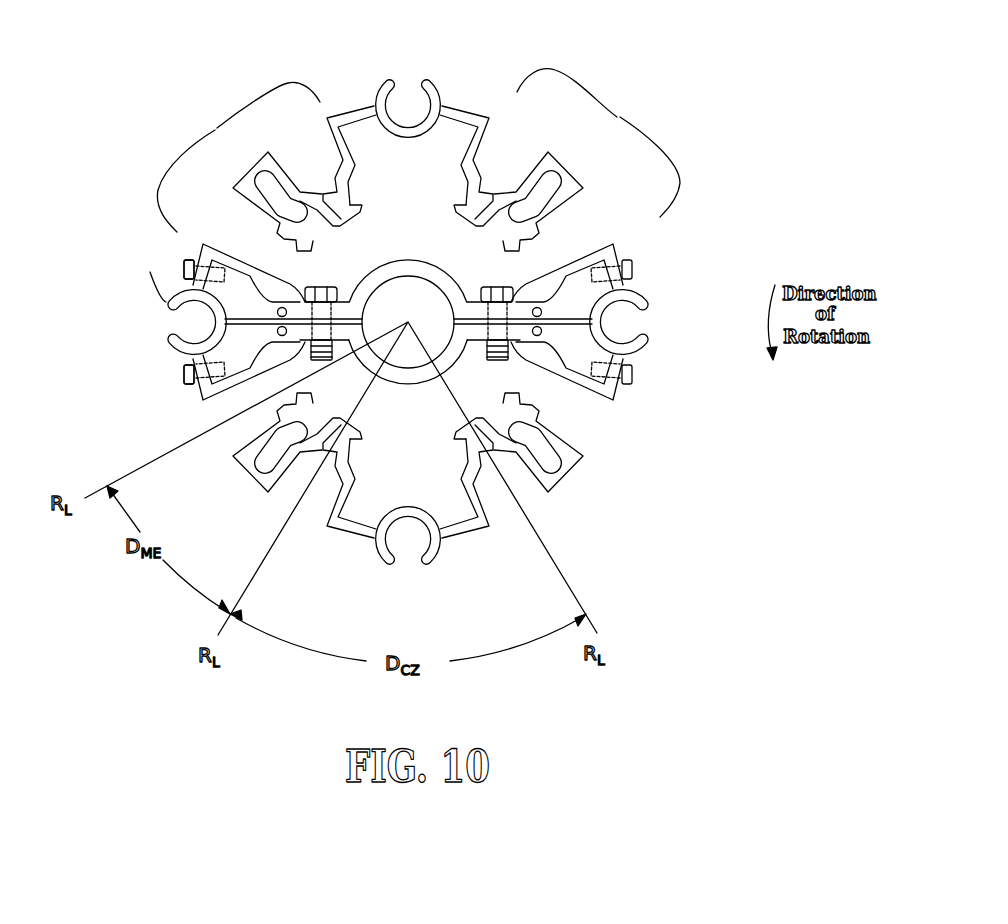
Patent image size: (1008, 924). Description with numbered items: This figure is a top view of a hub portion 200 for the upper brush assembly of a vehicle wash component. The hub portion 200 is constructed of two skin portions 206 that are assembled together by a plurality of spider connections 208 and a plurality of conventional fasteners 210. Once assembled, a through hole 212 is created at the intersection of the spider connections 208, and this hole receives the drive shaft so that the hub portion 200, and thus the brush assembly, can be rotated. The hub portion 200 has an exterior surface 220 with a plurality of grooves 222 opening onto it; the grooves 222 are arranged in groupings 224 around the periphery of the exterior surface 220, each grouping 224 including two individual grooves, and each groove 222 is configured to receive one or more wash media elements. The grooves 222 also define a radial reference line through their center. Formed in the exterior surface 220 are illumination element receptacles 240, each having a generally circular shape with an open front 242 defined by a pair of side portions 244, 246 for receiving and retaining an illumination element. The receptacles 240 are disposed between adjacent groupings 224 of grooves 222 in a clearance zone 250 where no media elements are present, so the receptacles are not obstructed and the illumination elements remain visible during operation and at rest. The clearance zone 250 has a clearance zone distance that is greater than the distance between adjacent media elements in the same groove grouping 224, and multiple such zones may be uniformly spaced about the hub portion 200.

The hub portion 200 is at (596, 80).
The skin portions 206 is at (613, 248).
The spider connections 208 is at (397, 270).
The fasteners 210 is at (300, 250).
The through hole 212 is at (430, 302).
The exterior surface 220 is at (352, 103).
The grooves 222 is at (233, 437).
The groupings 224 is at (630, 108).
The illumination element receptacles 240 is at (195, 322).
The open front 242 is at (150, 272).
The side portion 244 is at (183, 268).
The side portion 246 is at (183, 373).
The clearance zone 250 is at (457, 556).